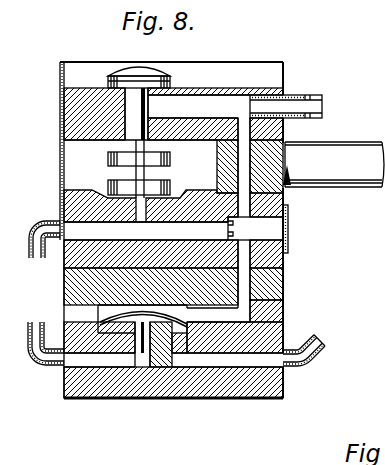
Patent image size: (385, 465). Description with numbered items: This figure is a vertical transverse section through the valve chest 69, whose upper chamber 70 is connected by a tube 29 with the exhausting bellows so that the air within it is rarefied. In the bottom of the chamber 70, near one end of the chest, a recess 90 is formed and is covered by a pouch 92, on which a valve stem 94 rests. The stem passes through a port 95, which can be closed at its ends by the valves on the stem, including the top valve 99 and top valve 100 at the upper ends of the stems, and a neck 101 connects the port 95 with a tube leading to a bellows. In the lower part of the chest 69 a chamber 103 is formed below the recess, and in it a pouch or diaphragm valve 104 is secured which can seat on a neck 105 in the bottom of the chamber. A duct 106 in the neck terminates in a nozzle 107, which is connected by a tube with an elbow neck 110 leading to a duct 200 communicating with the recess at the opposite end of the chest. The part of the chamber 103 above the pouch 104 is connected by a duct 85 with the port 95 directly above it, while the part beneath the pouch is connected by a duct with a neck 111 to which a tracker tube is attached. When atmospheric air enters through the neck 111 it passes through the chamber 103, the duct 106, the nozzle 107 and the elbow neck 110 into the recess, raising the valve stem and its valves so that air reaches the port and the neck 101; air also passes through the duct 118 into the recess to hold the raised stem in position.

The tube 29 is at (334, 164).
The valve chest 69 is at (272, 133).
The chamber 70 is at (140, 169).
The duct 85 is at (246, 297).
The recess 90 is at (112, 192).
The pouch 92 is at (182, 193).
The valve stem 94 is at (208, 163).
The port 95 is at (199, 107).
The top valve 99 is at (177, 263).
The top valve 100 is at (150, 72).
The neck 101 is at (291, 94).
The chamber 103 is at (116, 327).
The pouch or diaphragm valve 104 is at (170, 328).
The neck 105 is at (157, 345).
The duct 106 is at (147, 335).
The nozzle 107 is at (33, 321).
The elbow neck 110 is at (58, 226).
The neck 111 is at (312, 344).
The duct 118 is at (244, 200).
The duct 200 is at (127, 229).